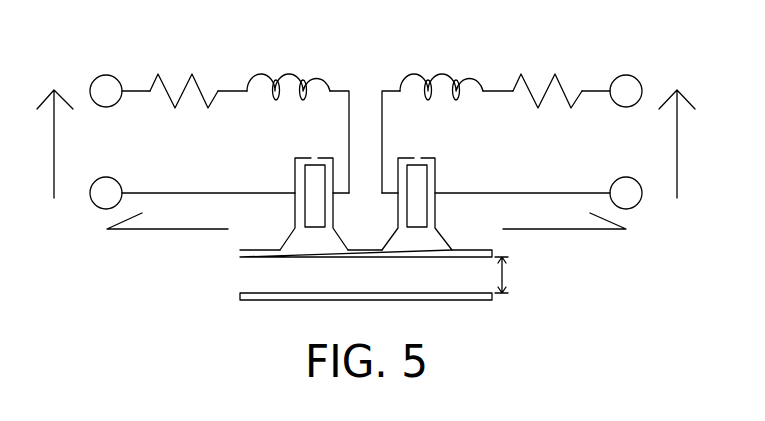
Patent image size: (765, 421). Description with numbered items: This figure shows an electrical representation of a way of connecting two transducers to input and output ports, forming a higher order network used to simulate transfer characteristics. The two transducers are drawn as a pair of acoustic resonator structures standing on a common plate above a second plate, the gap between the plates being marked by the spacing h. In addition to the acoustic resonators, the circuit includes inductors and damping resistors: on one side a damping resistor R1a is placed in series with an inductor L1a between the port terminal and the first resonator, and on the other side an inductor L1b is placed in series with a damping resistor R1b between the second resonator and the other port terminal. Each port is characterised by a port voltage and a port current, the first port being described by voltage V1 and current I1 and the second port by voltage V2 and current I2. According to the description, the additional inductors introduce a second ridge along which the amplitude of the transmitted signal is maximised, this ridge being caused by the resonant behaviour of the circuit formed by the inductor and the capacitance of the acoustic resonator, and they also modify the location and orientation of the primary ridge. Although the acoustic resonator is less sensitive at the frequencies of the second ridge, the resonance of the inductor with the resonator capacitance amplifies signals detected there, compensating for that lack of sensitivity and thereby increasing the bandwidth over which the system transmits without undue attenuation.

The first resistor R1a is at (184, 72).
The first inductor L1a is at (288, 68).
The second inductor L1b is at (441, 68).
The second resistor R1b is at (547, 72).
The first port voltage V1 is at (44, 144).
The second port voltage V2 is at (690, 144).
The first port current I1 is at (167, 216).
The second port current I2 is at (564, 216).
The height between plates h is at (510, 275).